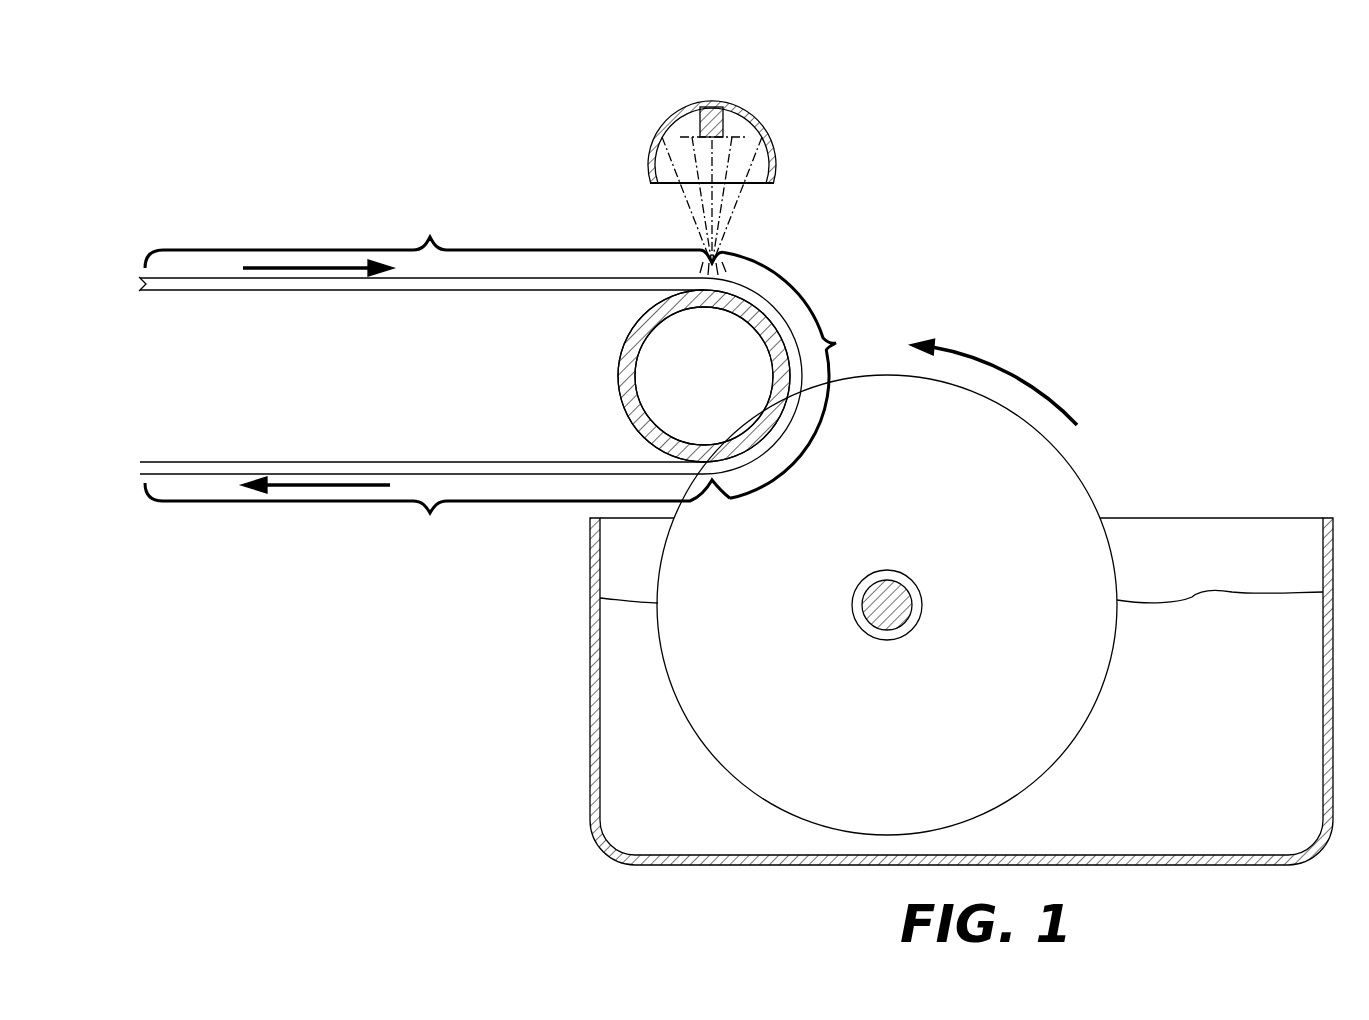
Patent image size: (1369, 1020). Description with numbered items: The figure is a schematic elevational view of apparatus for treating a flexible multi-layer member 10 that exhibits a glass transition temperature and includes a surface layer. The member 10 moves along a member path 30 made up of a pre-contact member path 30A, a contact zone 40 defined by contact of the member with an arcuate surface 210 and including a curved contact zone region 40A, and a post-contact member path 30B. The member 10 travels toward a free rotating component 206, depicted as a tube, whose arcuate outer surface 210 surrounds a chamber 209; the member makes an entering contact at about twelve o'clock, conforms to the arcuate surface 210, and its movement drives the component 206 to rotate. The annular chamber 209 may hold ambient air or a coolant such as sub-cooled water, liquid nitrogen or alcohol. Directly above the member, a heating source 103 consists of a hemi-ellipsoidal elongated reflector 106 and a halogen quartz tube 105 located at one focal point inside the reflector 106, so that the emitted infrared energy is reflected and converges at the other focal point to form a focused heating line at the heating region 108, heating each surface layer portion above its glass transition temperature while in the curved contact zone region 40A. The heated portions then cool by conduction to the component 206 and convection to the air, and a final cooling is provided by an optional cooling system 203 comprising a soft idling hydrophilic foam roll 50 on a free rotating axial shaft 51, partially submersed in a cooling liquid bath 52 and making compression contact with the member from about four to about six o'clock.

The member 10 is at (186, 294).
The member path 30 is at (292, 234).
The pre-contact member path 30A is at (428, 234).
The post-contact member path 30B is at (430, 515).
The contact zone 40 is at (842, 376).
The curved contact zone region 40A is at (840, 346).
The hydrophilic foam roll 50 is at (1078, 483).
The axial shaft 51 is at (902, 595).
The cooling liquid bath 52 is at (1222, 622).
The heating source 103 is at (625, 126).
The halogen quartz tube 105 is at (717, 106).
The reflector 106 is at (761, 130).
The heating region 108 is at (688, 268).
The cooling system 203 is at (1130, 396).
The free rotating component 206 is at (586, 355).
The chamber 209 is at (662, 383).
The arcuate surface 210 is at (759, 299).